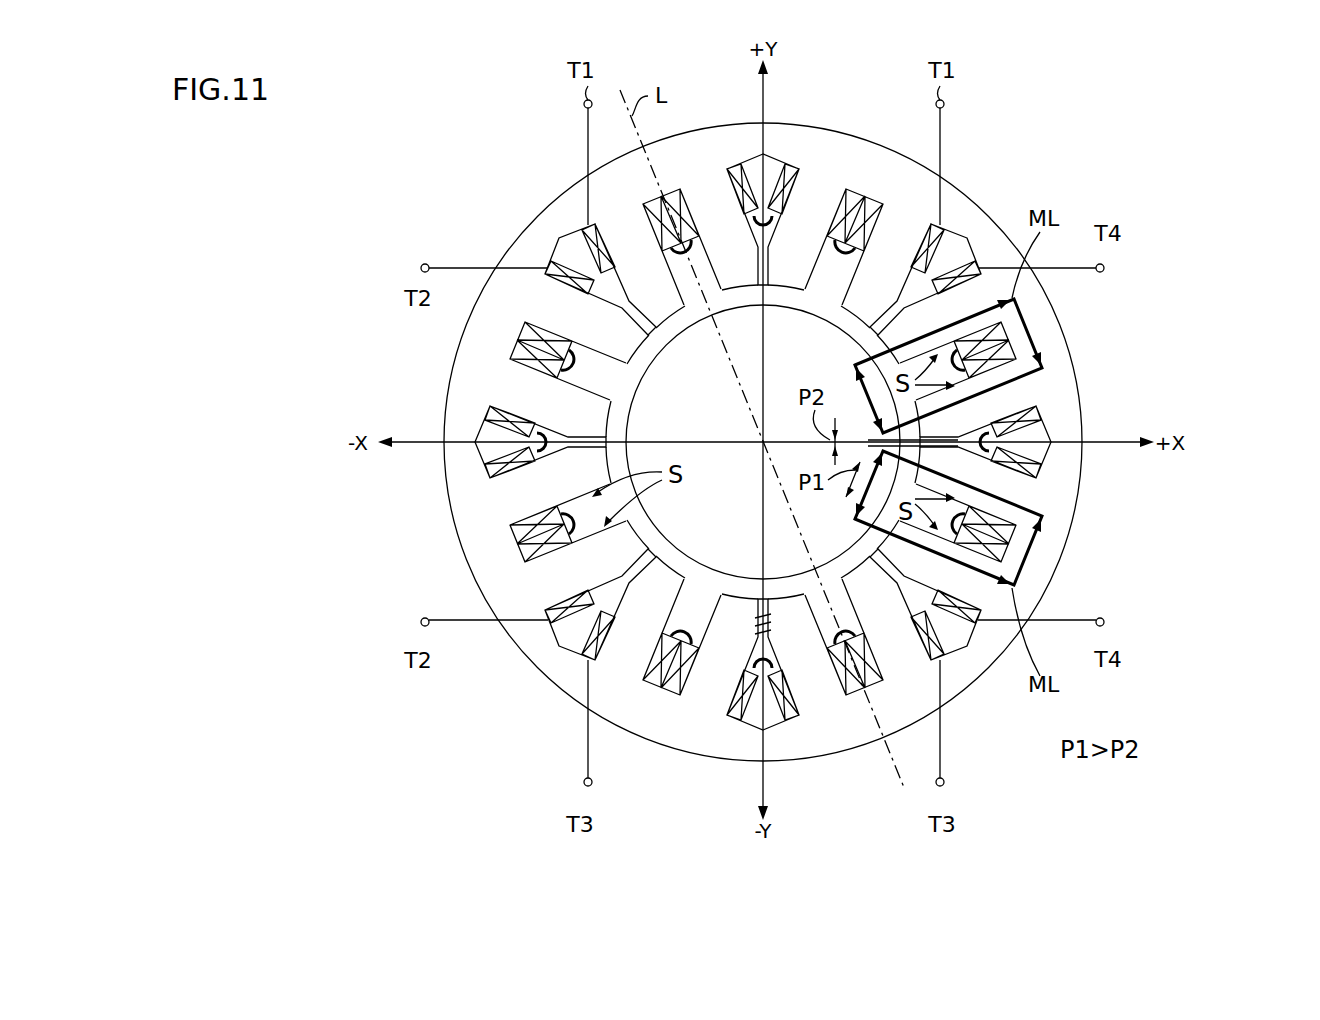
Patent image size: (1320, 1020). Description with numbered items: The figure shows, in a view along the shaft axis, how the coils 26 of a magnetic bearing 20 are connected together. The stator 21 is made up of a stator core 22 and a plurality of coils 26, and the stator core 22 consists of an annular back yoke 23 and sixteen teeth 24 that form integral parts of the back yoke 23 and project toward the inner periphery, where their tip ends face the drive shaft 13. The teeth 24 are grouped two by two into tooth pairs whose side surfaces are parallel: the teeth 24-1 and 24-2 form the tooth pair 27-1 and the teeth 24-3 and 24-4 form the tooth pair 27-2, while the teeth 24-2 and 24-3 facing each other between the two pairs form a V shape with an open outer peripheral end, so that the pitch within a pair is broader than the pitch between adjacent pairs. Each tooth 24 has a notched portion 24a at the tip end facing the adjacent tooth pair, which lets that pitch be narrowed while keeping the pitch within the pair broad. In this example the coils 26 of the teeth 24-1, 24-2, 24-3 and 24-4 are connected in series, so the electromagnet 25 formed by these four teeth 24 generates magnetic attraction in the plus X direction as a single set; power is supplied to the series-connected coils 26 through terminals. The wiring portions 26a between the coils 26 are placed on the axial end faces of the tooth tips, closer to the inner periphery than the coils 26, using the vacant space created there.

The magnetic bearing 20 is at (1011, 126).
The drive shaft 13 is at (665, 437).
The stator 21 is at (377, 175).
The stator core 22 is at (425, 160).
The back yoke 23 is at (537, 253).
The tooth 24 is at (567, 312).
The electromagnet 25 is at (377, 530).
The coil 26 is at (764, 377).
The wiring portion 26a is at (696, 245).
The notched portion 24a is at (757, 625).
The tooth 24-1 is at (980, 603).
The tooth 24-2 is at (1007, 490).
The tooth 24-3 is at (1007, 393).
The tooth 24-4 is at (983, 302).
The tooth pair 27-1 is at (1178, 510).
The tooth pair 27-2 is at (1178, 265).